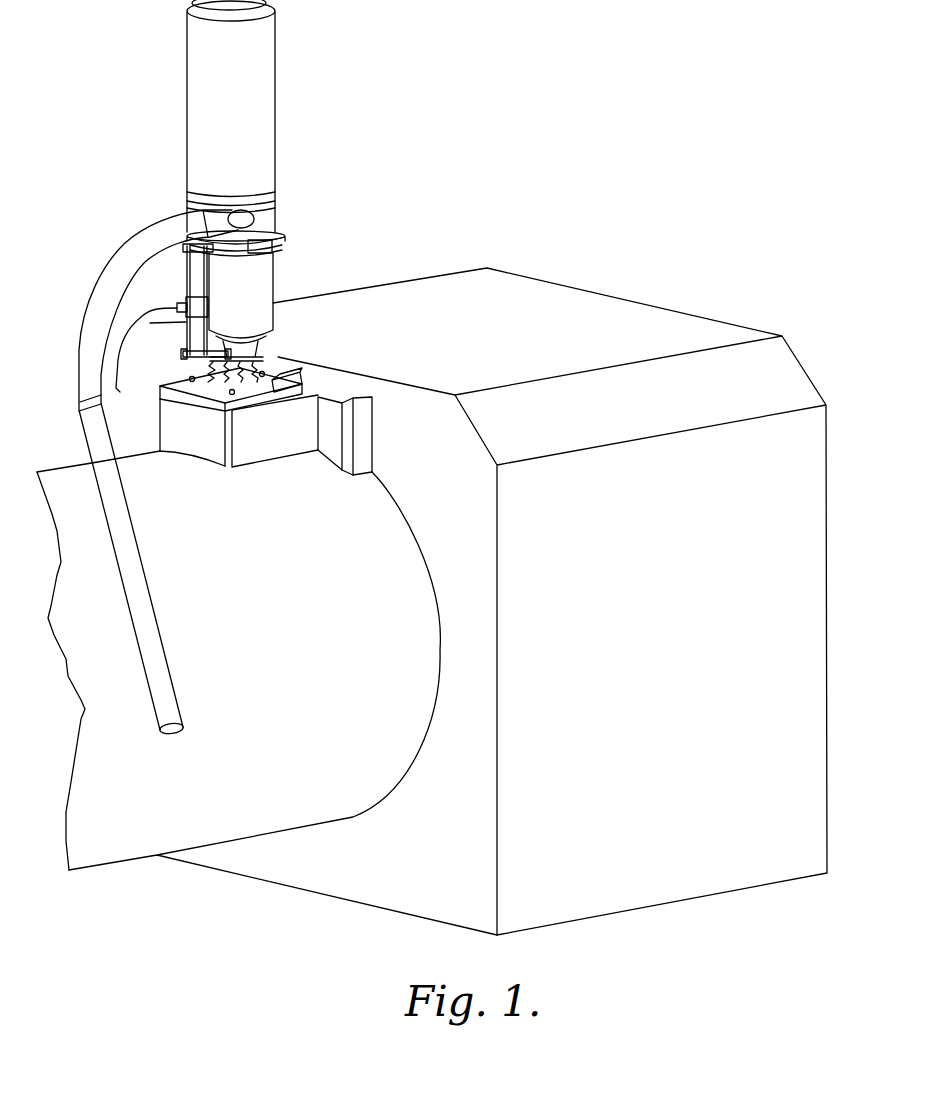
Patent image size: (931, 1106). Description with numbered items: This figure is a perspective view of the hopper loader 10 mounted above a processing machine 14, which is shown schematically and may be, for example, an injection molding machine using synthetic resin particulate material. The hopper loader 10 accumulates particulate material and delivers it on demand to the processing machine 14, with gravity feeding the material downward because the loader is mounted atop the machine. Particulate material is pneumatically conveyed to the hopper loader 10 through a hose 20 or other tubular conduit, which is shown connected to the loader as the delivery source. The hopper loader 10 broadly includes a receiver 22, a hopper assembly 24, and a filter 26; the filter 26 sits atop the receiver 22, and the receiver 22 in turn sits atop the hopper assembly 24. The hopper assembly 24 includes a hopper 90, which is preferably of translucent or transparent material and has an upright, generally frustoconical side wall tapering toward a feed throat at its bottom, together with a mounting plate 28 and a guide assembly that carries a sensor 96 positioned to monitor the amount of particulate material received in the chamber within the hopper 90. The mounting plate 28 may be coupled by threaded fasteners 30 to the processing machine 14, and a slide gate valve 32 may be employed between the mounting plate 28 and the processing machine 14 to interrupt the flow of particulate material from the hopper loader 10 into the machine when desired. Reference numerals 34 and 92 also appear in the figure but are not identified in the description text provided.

The hopper loader 10 is at (365, 204).
The processing machine 14 is at (636, 282).
The hose 20 is at (124, 239).
The receiver 22 is at (279, 218).
The hopper assembly 24 is at (291, 284).
The filter 26 is at (291, 42).
The mounting plate 28 is at (213, 386).
The threaded fasteners 30 is at (272, 378).
The slide gate valve 32 is at (263, 393).
The hose elbow 34 is at (241, 218).
The hopper 90 is at (276, 264).
The lower bracket 92 is at (192, 353).
The sensor 96 is at (184, 300).